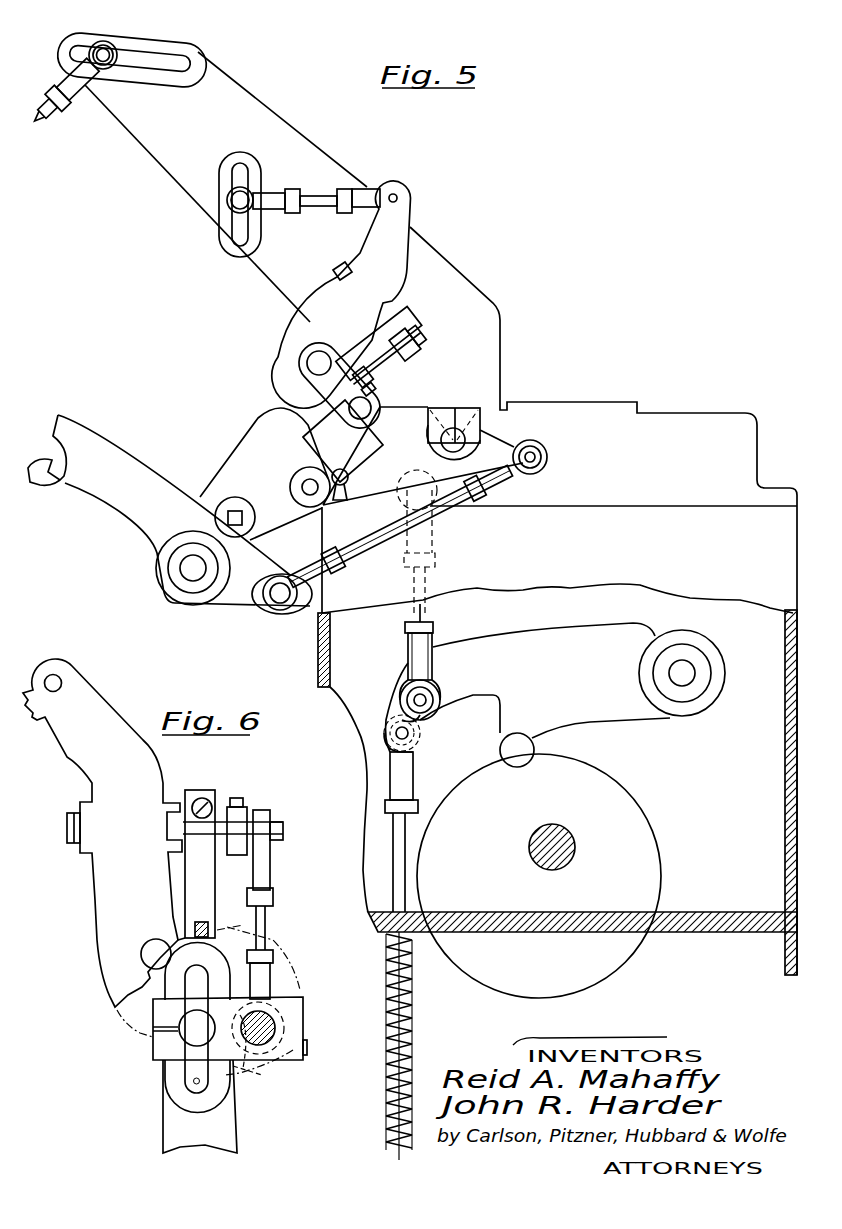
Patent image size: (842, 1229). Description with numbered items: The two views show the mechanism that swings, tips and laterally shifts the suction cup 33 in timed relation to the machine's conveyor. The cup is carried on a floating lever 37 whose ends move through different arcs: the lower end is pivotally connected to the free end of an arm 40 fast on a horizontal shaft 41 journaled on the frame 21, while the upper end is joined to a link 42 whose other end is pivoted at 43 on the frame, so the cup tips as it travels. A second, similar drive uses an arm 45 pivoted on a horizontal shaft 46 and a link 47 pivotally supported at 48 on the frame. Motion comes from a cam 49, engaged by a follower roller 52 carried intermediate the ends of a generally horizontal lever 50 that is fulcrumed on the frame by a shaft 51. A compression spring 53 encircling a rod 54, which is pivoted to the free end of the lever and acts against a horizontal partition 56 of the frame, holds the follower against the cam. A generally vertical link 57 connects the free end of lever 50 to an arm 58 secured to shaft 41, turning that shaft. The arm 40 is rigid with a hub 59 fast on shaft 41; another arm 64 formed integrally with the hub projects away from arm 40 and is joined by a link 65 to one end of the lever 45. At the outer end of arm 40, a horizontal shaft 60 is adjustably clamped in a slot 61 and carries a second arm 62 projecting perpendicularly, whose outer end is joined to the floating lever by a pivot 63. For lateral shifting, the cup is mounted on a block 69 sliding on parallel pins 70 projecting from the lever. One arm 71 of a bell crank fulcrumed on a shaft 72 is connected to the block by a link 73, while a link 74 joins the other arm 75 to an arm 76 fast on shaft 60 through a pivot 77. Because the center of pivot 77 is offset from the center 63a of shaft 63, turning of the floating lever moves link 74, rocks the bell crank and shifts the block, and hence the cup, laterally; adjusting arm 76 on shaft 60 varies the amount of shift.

In FIG. 5, the frame 21 is at (743, 946).
In FIG. 5, the suction cup 33 is at (372, 490).
In FIG. 5, the floating lever 37 is at (306, 312).
In FIG. 6, the floating lever 37 is at (105, 884).
In FIG. 5, the arm 40 is at (405, 438).
In FIG. 6, the arm 40 is at (168, 1120).
In FIG. 5, the horizontal shaft 41 is at (466, 443).
In FIG. 5, the link 42 is at (330, 206).
In FIG. 5, the pivot 43 is at (250, 195).
In FIG. 5, the arm 45 is at (120, 448).
In FIG. 5, the horizontal shaft 46 is at (183, 566).
In FIG. 5, the link 47 is at (46, 116).
In FIG. 5, the pivot support 48 is at (108, 47).
In FIG. 5, the cam 49 is at (476, 800).
In FIG. 5, the horizontal lever 50 is at (532, 637).
In FIG. 5, the shaft 51 is at (682, 673).
In FIG. 5, the follower roller 52 is at (500, 751).
In FIG. 5, the compression spring 53 is at (412, 992).
In FIG. 5, the rod 54 is at (394, 882).
In FIG. 5, the horizontal partition 56 is at (465, 931).
In FIG. 5, the vertical link 57 is at (428, 612).
In FIG. 5, the arm 58 is at (410, 470).
In FIG. 5, the hub 59 is at (470, 408).
In FIG. 5, the horizontal shaft 60 is at (342, 500).
In FIG. 6, the horizontal shaft 60 is at (185, 1037).
In FIG. 6, the slot 61 is at (186, 1073).
In FIG. 5, the second arm 62 is at (304, 472).
In FIG. 6, the second arm 62 is at (303, 1055).
In FIG. 6, the pivot 63 is at (276, 1030).
In FIG. 6, the center of shaft 63a is at (246, 1072).
In FIG. 5, the arm 64 is at (524, 446).
In FIG. 5, the link 65 is at (372, 544).
In FIG. 5, the block 69 is at (318, 385).
In FIG. 5, the pins 70 is at (321, 355).
In FIG. 6, the pins 70 is at (150, 945).
In FIG. 5, the arm of bell crank lever 71 is at (406, 317).
In FIG. 6, the arm of bell crank lever 71 is at (213, 875).
In FIG. 6, the shaft 72 is at (220, 820).
In FIG. 6, the link 73 is at (210, 924).
In FIG. 5, the link 74 is at (392, 384).
In FIG. 6, the link 74 is at (272, 912).
In FIG. 5, the arm of bell crank lever 75 is at (420, 338).
In FIG. 6, the arm of bell crank lever 75 is at (247, 816).
In FIG. 6, the arm 76 is at (303, 998).
In FIG. 6, the pivot 77 is at (242, 1022).